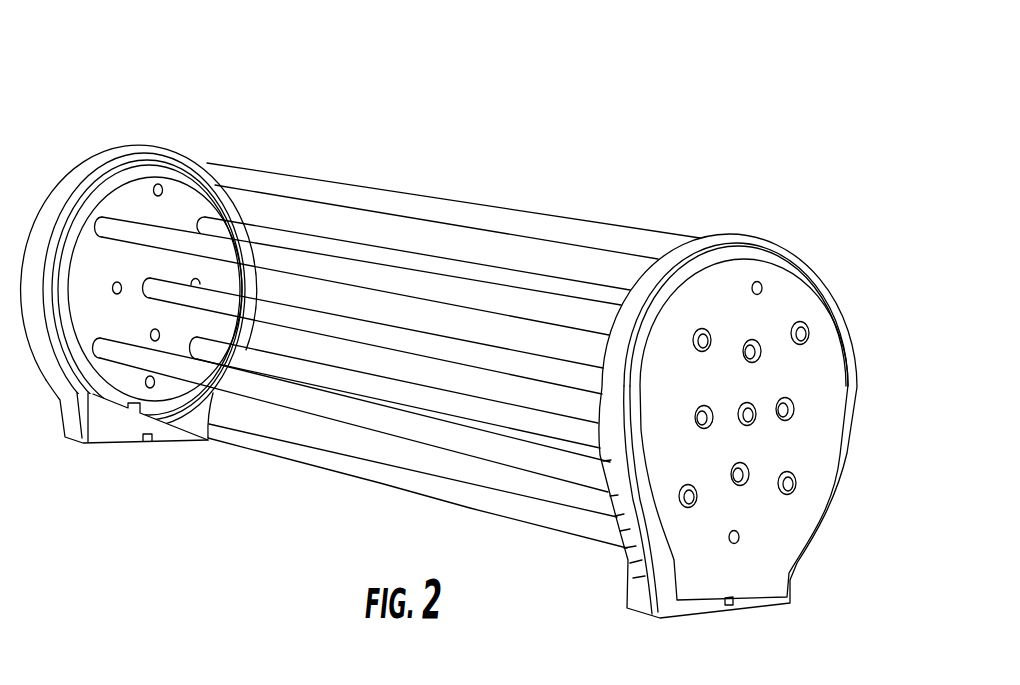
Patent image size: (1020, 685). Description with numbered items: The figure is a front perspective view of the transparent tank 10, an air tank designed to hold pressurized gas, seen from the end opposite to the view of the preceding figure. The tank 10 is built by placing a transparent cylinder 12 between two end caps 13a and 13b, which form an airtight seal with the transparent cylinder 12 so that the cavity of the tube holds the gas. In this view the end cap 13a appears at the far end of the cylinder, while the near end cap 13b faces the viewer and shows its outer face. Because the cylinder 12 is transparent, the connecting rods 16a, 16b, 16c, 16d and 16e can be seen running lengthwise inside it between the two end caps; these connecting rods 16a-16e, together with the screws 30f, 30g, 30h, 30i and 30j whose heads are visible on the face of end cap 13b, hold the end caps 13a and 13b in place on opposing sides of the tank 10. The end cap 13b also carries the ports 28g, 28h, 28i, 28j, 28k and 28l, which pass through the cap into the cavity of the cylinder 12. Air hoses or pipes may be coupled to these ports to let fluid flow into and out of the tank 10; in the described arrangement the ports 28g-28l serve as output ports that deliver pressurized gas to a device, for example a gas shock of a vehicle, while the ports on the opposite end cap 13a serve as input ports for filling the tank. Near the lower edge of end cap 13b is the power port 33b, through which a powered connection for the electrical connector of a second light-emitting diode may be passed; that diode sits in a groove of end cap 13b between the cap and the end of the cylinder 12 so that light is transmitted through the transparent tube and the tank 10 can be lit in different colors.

The transparent tank 10 is at (199, 76).
The transparent cylinder 12 is at (545, 210).
The end cap 13a is at (104, 160).
The end cap 13b is at (765, 240).
The connecting rod 16a is at (408, 258).
The connecting rod 16b is at (383, 270).
The connecting rod 16c is at (343, 325).
The connecting rod 16d is at (287, 400).
The connecting rod 16e is at (330, 375).
The port 28g is at (762, 288).
The port 28h is at (761, 353).
The port 28i is at (794, 409).
The port 28j is at (712, 421).
The port 28k is at (747, 480).
The port 28l is at (741, 540).
The screw 30f is at (808, 330).
The screw 30g is at (698, 344).
The screw 30h is at (756, 416).
The screw 30i is at (682, 503).
The screw 30j is at (796, 486).
The power port 33b is at (731, 608).